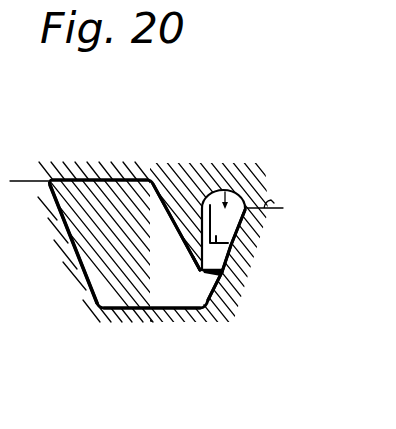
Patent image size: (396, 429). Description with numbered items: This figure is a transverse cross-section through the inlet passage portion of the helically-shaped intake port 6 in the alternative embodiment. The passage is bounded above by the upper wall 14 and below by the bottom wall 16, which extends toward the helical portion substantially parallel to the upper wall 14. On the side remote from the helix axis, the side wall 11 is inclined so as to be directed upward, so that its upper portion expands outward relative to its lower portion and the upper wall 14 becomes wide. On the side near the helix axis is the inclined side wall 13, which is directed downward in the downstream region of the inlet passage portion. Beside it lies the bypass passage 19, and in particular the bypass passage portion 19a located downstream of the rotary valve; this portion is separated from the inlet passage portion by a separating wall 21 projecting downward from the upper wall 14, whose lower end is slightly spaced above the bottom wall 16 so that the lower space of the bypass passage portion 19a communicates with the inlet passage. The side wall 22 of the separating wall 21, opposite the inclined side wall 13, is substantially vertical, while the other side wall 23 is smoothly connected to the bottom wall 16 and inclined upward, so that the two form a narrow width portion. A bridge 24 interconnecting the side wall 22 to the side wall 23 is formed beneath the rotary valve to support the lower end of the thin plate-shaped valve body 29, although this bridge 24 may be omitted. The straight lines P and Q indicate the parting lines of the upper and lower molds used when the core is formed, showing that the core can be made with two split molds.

The helically-shaped intake port 6 is at (142, 184).
The upper wall of the inlet passage portion 14 is at (103, 177).
The side wall of the inlet passage portion remote from the helix axis 11 is at (66, 230).
The bottom wall of the inlet passage portion 16 is at (138, 303).
The inclined side wall of the inlet passage portion 13 is at (165, 212).
The separating wall 21 is at (185, 232).
The valve body 29 is at (196, 253).
The bypass passage 19 is at (224, 192).
The bypass passage portion downstream of the rotary valve 19a is at (241, 220).
The side wall of the bypass passage portion 22 is at (211, 203).
The other side wall of the bypass passage portion 23 is at (246, 208).
The bridge 24 is at (229, 263).
The parting line P is at (28, 181).
The parting line Q is at (270, 190).